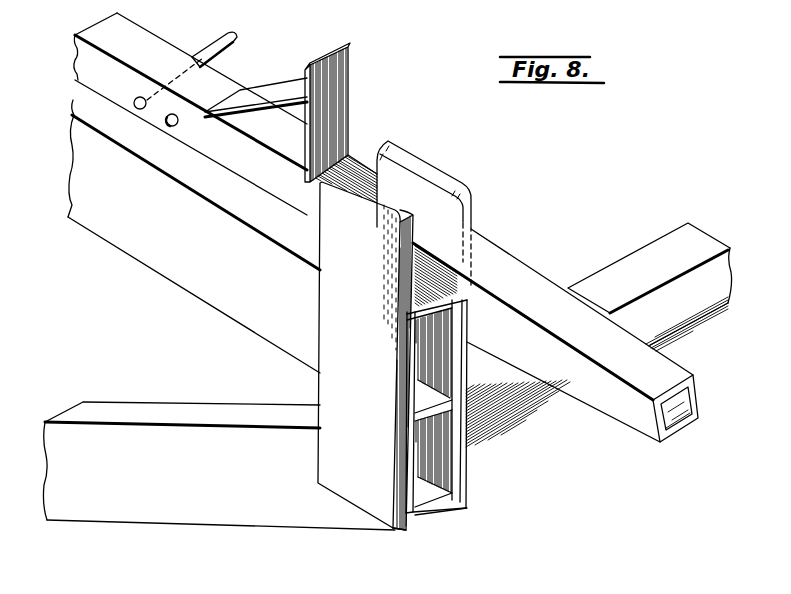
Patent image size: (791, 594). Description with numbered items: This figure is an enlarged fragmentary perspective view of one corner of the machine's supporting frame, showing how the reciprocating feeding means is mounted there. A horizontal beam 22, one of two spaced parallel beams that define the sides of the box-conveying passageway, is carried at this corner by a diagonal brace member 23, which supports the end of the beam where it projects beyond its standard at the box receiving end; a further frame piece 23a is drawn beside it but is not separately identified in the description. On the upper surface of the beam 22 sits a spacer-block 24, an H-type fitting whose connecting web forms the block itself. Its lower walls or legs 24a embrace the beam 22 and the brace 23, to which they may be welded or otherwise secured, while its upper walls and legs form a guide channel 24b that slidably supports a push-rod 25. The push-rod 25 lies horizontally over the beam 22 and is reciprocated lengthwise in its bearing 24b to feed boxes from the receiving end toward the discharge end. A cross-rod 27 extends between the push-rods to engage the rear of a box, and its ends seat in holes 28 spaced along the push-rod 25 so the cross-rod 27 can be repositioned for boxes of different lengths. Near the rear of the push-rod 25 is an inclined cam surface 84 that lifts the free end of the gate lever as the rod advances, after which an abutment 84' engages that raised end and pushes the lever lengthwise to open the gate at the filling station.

The horizontal beam 22 is at (236, 295).
The diagonal brace member 23 is at (148, 410).
The beam 23a is at (615, 277).
The spacer-block 24 is at (422, 303).
The lower walls or legs 24a is at (463, 495).
The guide channel 24b is at (423, 188).
The push-rod 25 is at (505, 268).
The cross-rod 27 is at (206, 52).
The holes 28 is at (73, 62).
The inclined cam surface 84 is at (256, 83).
The abutment 84' is at (357, 111).